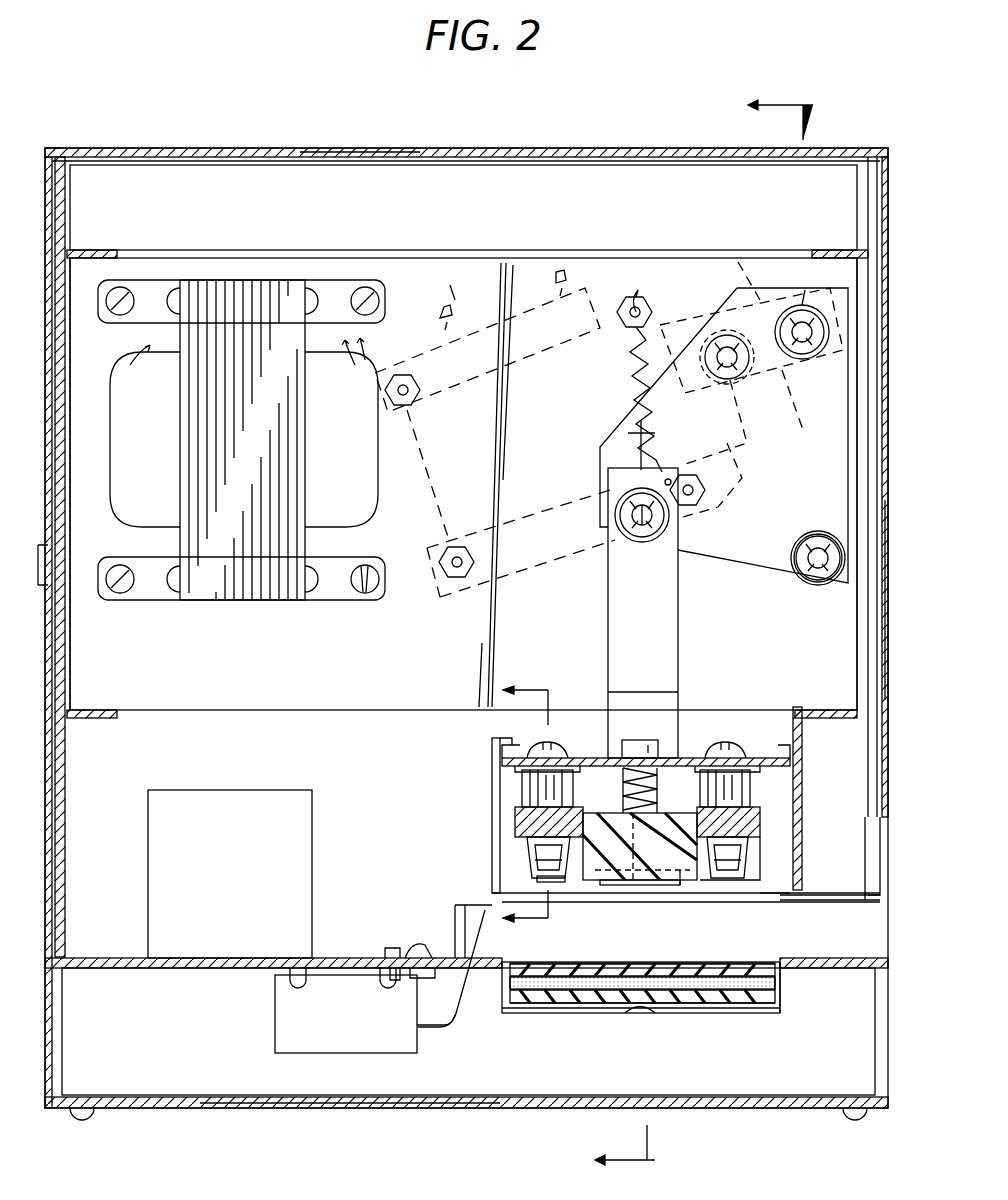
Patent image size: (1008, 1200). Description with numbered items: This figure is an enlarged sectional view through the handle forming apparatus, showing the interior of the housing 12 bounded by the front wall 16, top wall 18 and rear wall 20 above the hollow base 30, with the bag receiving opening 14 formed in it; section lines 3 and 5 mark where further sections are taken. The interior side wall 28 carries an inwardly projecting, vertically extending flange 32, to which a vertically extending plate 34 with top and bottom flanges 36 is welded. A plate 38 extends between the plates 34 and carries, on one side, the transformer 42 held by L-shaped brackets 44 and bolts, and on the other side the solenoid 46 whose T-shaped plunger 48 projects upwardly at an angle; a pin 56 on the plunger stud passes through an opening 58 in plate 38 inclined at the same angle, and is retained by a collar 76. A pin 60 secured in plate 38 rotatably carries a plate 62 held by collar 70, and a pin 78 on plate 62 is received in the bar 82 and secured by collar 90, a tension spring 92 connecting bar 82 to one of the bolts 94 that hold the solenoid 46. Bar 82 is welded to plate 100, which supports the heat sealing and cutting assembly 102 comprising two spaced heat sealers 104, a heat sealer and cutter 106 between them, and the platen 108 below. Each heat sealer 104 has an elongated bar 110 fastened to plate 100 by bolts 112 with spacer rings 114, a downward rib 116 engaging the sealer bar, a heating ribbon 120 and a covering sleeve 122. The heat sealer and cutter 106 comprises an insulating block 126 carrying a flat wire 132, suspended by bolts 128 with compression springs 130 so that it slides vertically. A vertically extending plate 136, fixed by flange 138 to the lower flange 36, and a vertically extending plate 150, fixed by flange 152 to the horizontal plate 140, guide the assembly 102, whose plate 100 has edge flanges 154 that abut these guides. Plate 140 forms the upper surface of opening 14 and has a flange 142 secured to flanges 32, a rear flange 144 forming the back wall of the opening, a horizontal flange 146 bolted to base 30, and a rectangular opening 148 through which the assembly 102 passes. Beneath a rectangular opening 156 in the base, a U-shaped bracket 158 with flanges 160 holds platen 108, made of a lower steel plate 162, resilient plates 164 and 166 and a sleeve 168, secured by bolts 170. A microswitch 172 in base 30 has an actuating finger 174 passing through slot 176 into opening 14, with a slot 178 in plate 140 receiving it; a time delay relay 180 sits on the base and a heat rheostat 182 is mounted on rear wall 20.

The section line 3- 3 is at (691, 635).
The section line 5- 5 is at (538, 804).
The housing 12 is at (575, 150).
The bag receiving opening 14 is at (886, 933).
The front wall 16 is at (884, 612).
The top wall 18 is at (355, 152).
The rear wall 20 is at (45, 152).
The interior side wall 28 is at (492, 227).
The hollow base 30 is at (305, 1108).
The flange 32 is at (62, 200).
The vertically extending plate 34 is at (66, 665).
The flange 36 is at (115, 255).
The plate 38 is at (352, 688).
The transformer 42 is at (355, 465).
The L-shaped bracket 44 is at (140, 570).
The solenoid 46 is at (440, 514).
The T-shaped plunger 48 is at (728, 480).
The pin 56 is at (705, 330).
The opening 58 is at (738, 262).
The pin 60 is at (828, 532).
The plate 62 is at (830, 473).
The collar 70 is at (790, 545).
The collar 76 is at (748, 382).
The pin 78 is at (640, 530).
The bar 82 is at (650, 633).
The collar 90 is at (665, 548).
The tension spring 92 is at (660, 422).
The bolt 94 is at (638, 290).
The plate 100 is at (683, 756).
The heat sealing and cutting assembly 102 is at (775, 880).
The heat sealer 104 is at (505, 830).
The heat sealer and cutter 106 is at (715, 890).
The platen 108 is at (665, 960).
The elongated bar 110 is at (515, 814).
The bolt 112 is at (548, 752).
The spacer ring 114 is at (520, 790).
The rib 116 is at (527, 845).
The heating ribbon 120 is at (548, 880).
The sleeve 122 is at (527, 862).
The block 126 is at (655, 818).
The bolt 128 is at (625, 742).
The compression spring 130 is at (626, 783).
The flat wire 132 is at (685, 885).
The vertically extending plate 136 is at (802, 832).
The flange 138 is at (838, 710).
The horizontal plate 140 is at (845, 900).
The flange 142 is at (880, 875).
The rear flange 144 is at (435, 948).
The flange 146 is at (388, 955).
The rectangular opening 148 is at (638, 880).
The vertically extending plate 150 is at (492, 770).
The flange 152 is at (492, 886).
The flange 154 is at (520, 748).
The rectangular opening 156 is at (740, 962).
The U-shaped bracket 158 is at (712, 1013).
The flange 160 is at (495, 995).
The lower steel plate 162 is at (770, 1010).
The resilient plate 164 is at (592, 990).
The resilient plate 166 is at (546, 978).
The sleeve 168 is at (562, 968).
The bolt 170 is at (648, 1013).
The microswitch 172 is at (355, 1027).
The actuating finger 174 is at (457, 1030).
The slot 176 is at (478, 958).
The slot 178 is at (460, 905).
The time delay relay 180 is at (250, 798).
The heat rheostat 182 is at (50, 545).